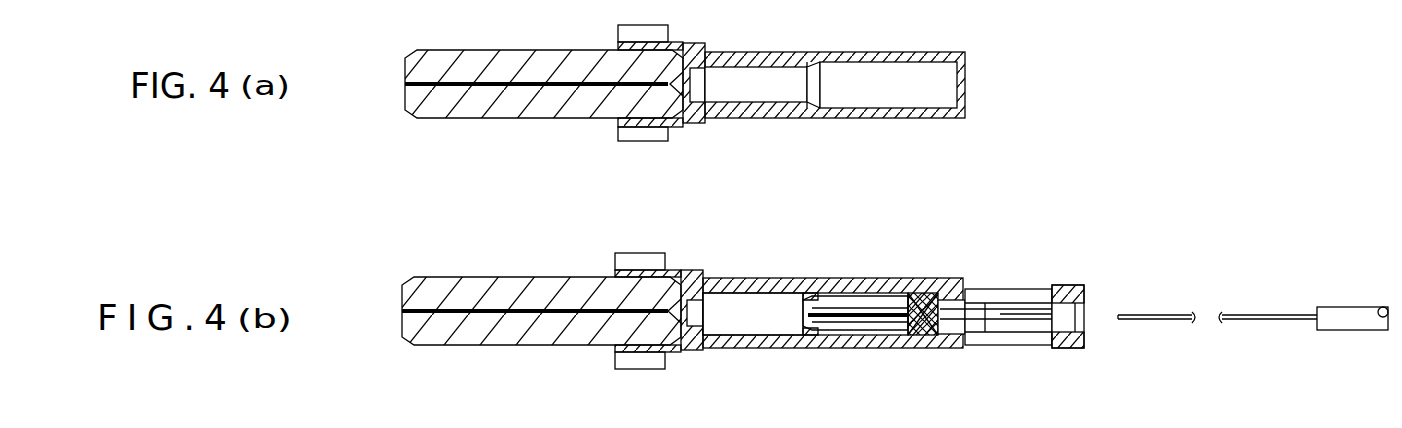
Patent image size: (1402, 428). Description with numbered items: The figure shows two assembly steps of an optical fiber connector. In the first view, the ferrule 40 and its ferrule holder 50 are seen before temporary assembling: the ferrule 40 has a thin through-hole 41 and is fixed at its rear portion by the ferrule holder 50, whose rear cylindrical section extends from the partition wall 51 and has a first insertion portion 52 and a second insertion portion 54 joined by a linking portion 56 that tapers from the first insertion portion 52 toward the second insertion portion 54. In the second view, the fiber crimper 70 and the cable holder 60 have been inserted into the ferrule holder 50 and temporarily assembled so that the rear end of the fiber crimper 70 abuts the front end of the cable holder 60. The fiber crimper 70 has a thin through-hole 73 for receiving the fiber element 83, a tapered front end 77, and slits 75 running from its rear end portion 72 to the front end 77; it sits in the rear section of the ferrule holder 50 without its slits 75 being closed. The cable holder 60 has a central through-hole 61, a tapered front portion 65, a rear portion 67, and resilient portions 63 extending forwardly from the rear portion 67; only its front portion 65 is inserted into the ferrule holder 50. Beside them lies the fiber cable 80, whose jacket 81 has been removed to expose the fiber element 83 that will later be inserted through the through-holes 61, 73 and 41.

In FIG. 4A, the ferrule 40 is at (452, 105).
In FIG. 4B, the ferrule 40 is at (541, 339).
In FIG. 4B, the through-hole 41 is at (557, 313).
In FIG. 4A, the ferrule holder 50 is at (835, 90).
In FIG. 4B, the ferrule holder 50 is at (833, 317).
In FIG. 4A, the partition wall 51 is at (709, 118).
In FIG. 4A, the first insertion portion 52 is at (905, 82).
In FIG. 4B, the first insertion portion 52 is at (905, 350).
In FIG. 4A, the second insertion portion 54 is at (784, 78).
In FIG. 4B, the second insertion portion 54 is at (753, 320).
In FIG. 4A, the linking portion 56 is at (814, 100).
In FIG. 4B, the cable holder 60 is at (1045, 317).
In FIG. 4B, the through-hole 61 is at (1031, 325).
In FIG. 4B, the resilient portions 63 is at (993, 292).
In FIG. 4B, the front portion 65 is at (950, 300).
In FIG. 4B, the rear portion 67 is at (1070, 295).
In FIG. 4B, the fiber crimper 70 is at (849, 317).
In FIG. 4B, the rear end portion 72 is at (918, 295).
In FIG. 4B, the through-hole 73 is at (856, 305).
In FIG. 4B, the slits 75 is at (818, 333).
In FIG. 4B, the front end 77 is at (803, 297).
In FIG. 4B, the fiber cable 80 is at (1253, 315).
In FIG. 4B, the jacket 81 is at (1343, 322).
In FIG. 4B, the fiber element 83 is at (1228, 317).